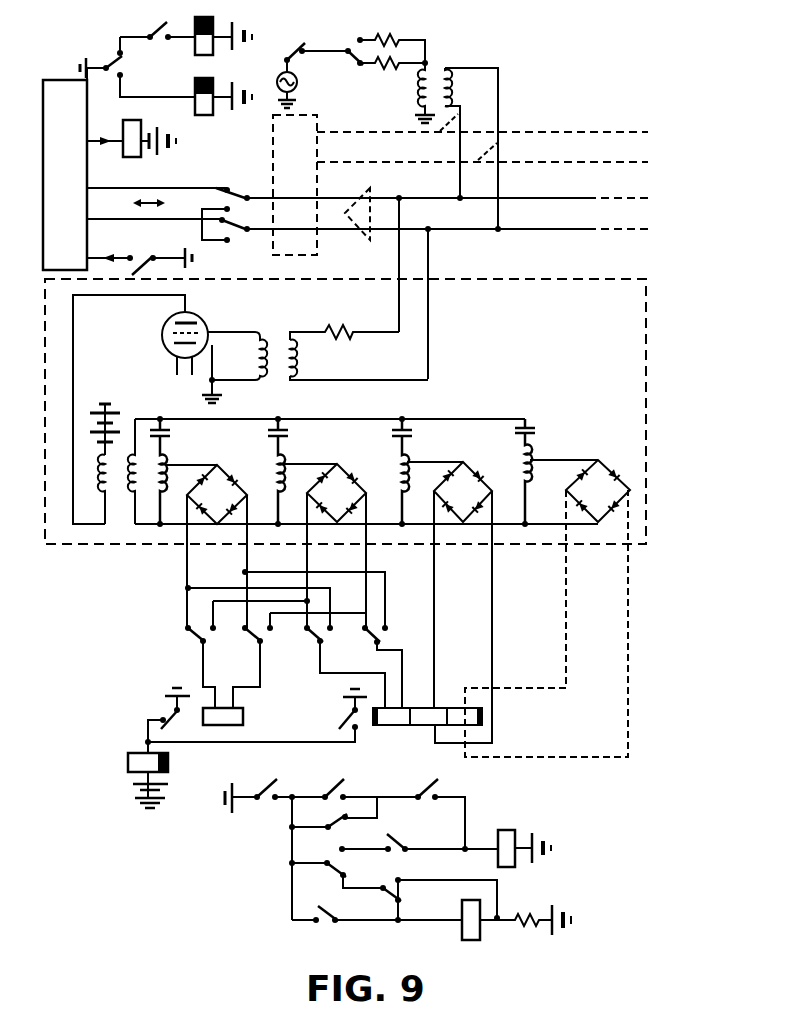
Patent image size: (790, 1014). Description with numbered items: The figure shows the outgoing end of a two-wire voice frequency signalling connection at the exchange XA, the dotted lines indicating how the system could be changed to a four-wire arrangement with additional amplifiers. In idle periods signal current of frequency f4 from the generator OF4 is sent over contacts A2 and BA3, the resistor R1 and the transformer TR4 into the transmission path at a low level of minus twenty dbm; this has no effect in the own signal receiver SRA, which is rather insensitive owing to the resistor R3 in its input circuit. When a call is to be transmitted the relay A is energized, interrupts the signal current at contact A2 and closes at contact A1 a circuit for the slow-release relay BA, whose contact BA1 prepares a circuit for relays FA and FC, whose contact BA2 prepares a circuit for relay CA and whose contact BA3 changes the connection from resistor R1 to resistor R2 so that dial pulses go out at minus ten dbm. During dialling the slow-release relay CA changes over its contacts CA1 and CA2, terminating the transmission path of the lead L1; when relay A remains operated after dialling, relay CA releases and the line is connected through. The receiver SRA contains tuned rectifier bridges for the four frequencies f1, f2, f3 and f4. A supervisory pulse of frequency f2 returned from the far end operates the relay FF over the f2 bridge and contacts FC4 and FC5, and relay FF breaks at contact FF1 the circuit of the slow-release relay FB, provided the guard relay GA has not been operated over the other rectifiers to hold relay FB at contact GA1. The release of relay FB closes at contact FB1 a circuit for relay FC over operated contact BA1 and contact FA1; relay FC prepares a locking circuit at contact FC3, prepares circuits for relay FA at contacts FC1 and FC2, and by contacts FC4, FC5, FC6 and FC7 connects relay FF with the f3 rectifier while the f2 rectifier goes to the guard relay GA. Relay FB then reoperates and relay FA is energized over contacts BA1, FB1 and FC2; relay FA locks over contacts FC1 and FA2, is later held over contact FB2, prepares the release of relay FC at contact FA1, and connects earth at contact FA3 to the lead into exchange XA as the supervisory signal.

The exchange XA is at (65, 175).
The relay A is at (131, 148).
The contact A1 is at (126, 64).
The contact A2 is at (316, 47).
The slow-release relay BA is at (223, 107).
The contact BA1 is at (289, 789).
The contact BA2 is at (157, 41).
The contact BA3 is at (340, 60).
The slow-release relay CA is at (223, 27).
The contact CA1 is at (417, 199).
The contact CA2 is at (368, 224).
The lead L1 is at (157, 203).
The contact FA3 is at (139, 257).
The generator OF4 is at (307, 84).
The resistor R1 is at (391, 39).
The resistor R2 is at (392, 74).
The resistor R3 is at (344, 322).
The transformer TR4 is at (456, 138).
The signal receiver SRA is at (511, 292).
The rectifier circuit for frequency f1 is at (572, 473).
The rectifier circuit for frequency f2 is at (198, 471).
The rectifier circuit for frequency f3 is at (317, 471).
The rectifier circuit for frequency f4 is at (442, 471).
The contact FC4 is at (187, 666).
The contact FC5 is at (241, 666).
The contact FC6 is at (334, 666).
The contact FC7 is at (369, 666).
The contact FF1 is at (163, 708).
The relay FF is at (238, 718).
The contact GA1 is at (338, 709).
The guard relay GA is at (427, 727).
The slow-release relay FB is at (163, 780).
The contact FC1 is at (370, 789).
The contact FA2 is at (445, 811).
The contact FB2 is at (336, 819).
The contact FC2 is at (418, 839).
The relay FA is at (523, 839).
The contact FB1 is at (336, 872).
The contact FA1 is at (440, 899).
The contact FC3 is at (377, 927).
The relay FC is at (516, 932).